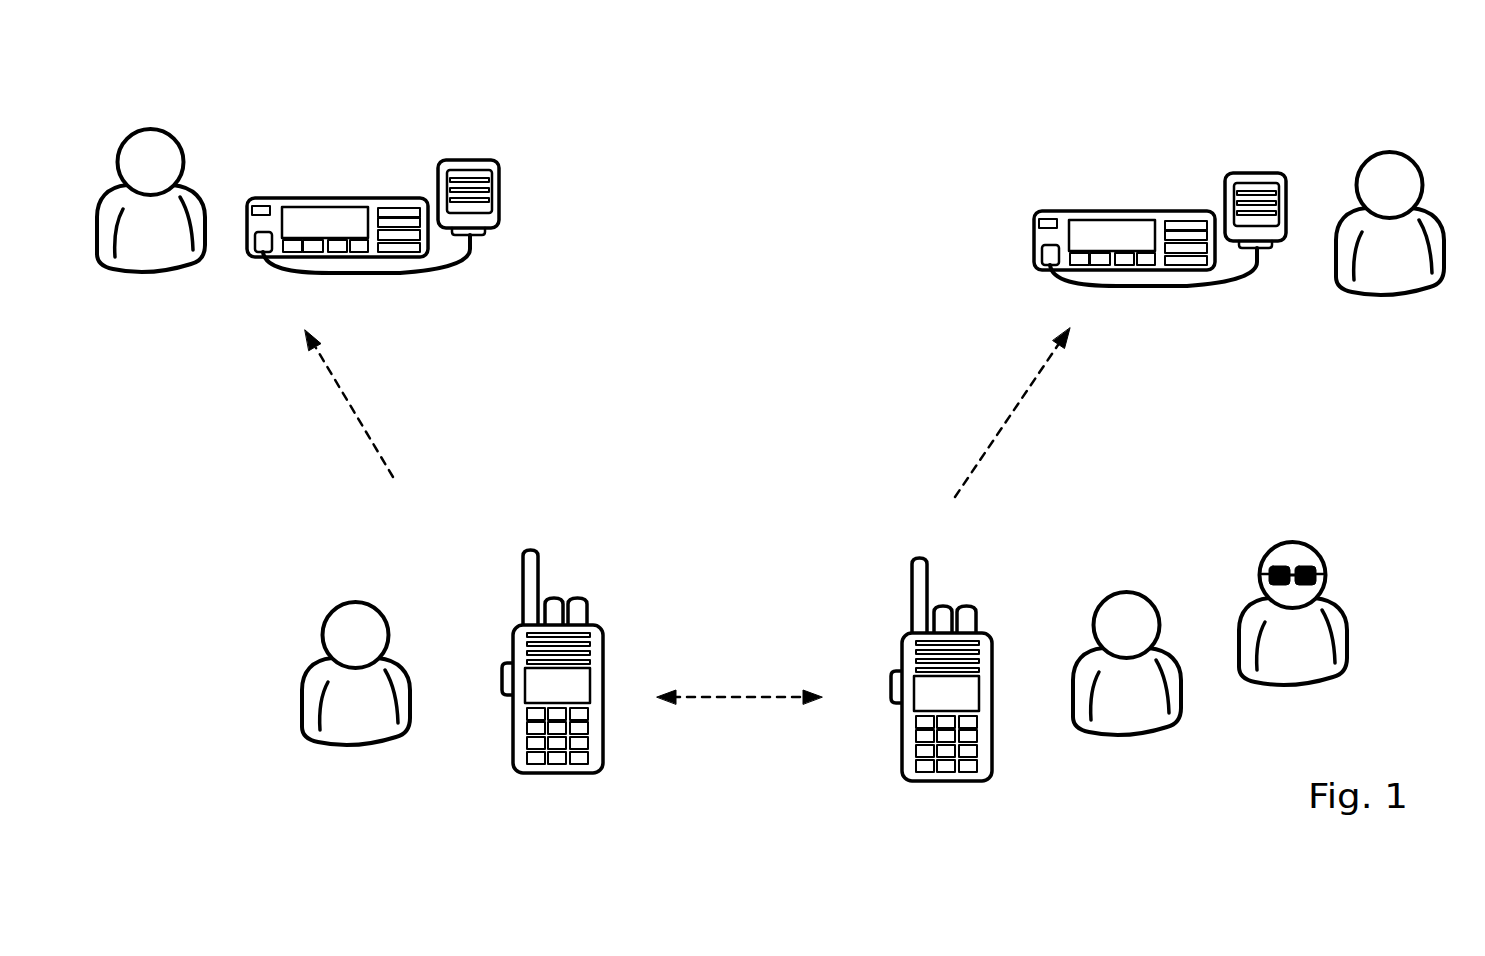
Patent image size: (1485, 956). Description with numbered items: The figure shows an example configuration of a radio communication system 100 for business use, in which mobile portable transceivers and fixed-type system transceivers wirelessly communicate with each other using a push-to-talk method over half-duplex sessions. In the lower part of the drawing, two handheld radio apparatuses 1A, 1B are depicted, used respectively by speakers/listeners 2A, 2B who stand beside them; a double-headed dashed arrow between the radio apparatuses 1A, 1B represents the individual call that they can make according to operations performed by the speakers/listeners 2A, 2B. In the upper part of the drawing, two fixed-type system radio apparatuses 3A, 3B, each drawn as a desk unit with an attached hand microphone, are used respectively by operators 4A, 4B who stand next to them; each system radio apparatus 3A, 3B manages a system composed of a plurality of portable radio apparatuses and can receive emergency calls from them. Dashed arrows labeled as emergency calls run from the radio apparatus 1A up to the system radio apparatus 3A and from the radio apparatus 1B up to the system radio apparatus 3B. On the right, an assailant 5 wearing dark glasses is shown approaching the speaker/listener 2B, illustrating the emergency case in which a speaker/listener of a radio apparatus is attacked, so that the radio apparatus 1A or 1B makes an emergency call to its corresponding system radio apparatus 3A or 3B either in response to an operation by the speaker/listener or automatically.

The radio communication system 100 is at (725, 87).
The radio apparatus 1A is at (573, 600).
The radio apparatus 1B is at (970, 607).
The speaker/listener 2A is at (366, 606).
The speaker/listener 2B is at (1147, 595).
The system radio apparatus 3A is at (317, 198).
The system radio apparatus 3B is at (1077, 212).
The operator 4A is at (167, 131).
The operator 4B is at (1387, 152).
The assailant 5 is at (1310, 548).